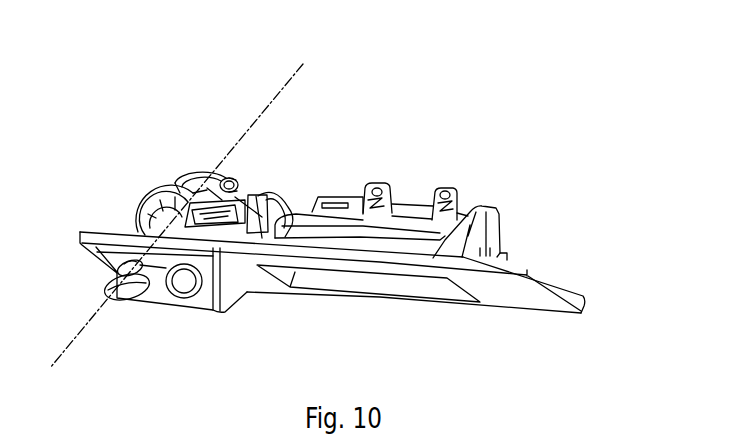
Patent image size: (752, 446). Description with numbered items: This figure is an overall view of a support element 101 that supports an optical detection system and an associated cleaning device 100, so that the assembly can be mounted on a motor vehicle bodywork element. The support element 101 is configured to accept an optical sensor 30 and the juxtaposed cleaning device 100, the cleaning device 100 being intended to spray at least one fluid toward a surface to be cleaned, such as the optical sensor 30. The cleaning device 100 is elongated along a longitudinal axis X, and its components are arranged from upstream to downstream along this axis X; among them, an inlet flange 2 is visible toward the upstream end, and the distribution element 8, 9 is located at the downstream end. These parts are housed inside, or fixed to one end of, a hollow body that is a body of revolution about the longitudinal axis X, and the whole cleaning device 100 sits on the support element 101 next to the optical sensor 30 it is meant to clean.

The cleaning device 100 is at (143, 174).
The support element 101 is at (544, 247).
The inlet flange 2 is at (207, 168).
The longitudinal axis X is at (183, 207).
The optical sensor 30 is at (221, 238).
The distribution element 8 is at (99, 298).
The distribution element 9 is at (127, 310).